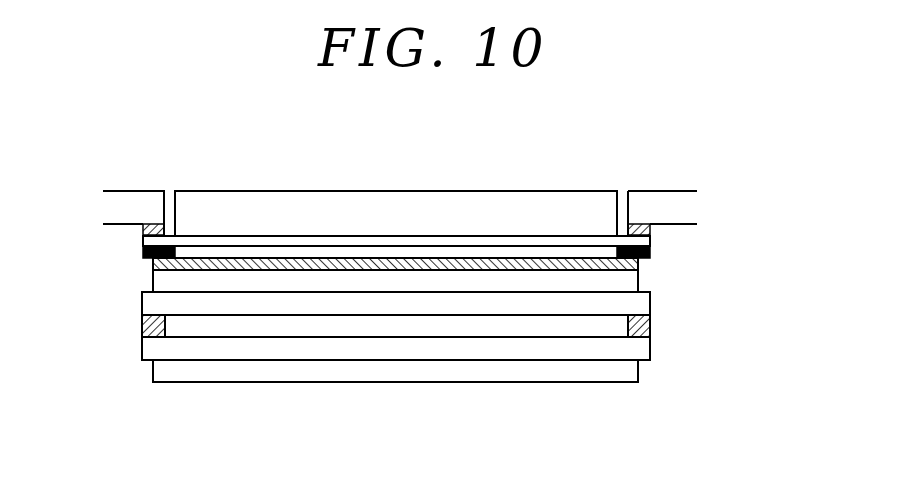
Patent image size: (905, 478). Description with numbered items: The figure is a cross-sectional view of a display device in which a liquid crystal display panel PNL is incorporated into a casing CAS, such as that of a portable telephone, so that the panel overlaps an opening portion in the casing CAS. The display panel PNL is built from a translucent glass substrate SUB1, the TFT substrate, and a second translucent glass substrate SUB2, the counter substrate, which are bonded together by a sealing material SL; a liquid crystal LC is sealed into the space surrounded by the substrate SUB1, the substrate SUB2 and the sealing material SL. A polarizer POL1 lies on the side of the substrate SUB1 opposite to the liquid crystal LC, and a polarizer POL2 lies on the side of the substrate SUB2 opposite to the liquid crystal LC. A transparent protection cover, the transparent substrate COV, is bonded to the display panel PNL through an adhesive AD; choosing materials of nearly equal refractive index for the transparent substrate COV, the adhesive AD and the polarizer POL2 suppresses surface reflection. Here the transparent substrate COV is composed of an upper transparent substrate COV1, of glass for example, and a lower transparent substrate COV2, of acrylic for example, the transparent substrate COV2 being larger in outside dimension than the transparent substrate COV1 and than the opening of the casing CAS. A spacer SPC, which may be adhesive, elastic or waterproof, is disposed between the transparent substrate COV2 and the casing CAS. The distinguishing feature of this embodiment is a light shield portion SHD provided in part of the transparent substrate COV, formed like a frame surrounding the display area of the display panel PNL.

The casing CAS is at (133, 206).
The spacer SPC is at (142, 232).
The transparent substrate COV is at (413, 180).
The transparent substrate COV1 is at (470, 203).
The transparent substrate COV2 is at (500, 247).
The light shield portion SHD is at (652, 253).
The adhesive AD is at (205, 269).
The display panel PNL is at (494, 356).
The polarizer POL2 is at (633, 279).
The substrate SUB2 is at (642, 302).
The liquid crystal LC is at (598, 325).
The sealing material SL is at (645, 327).
The substrate SUB1 is at (602, 353).
The polarizer POL1 is at (453, 401).